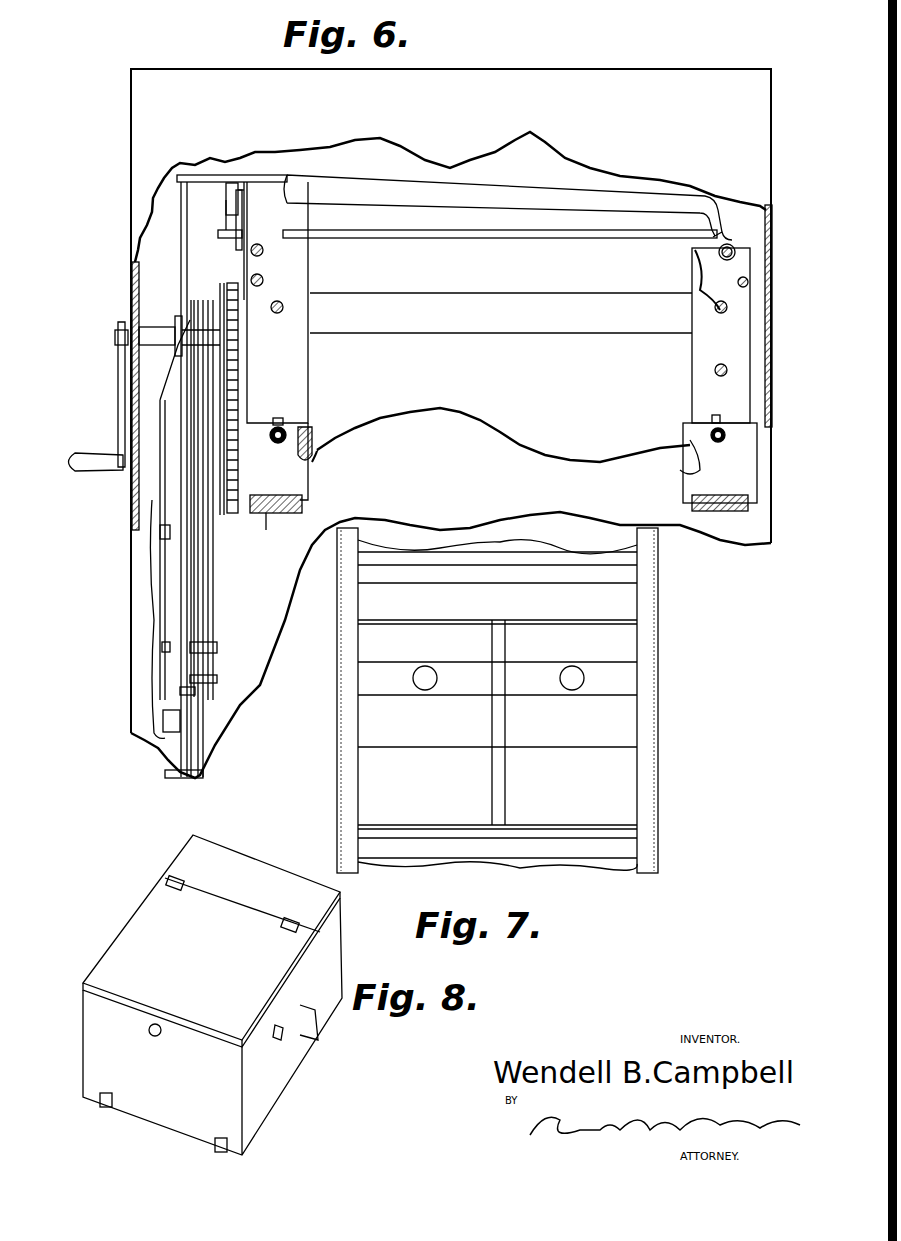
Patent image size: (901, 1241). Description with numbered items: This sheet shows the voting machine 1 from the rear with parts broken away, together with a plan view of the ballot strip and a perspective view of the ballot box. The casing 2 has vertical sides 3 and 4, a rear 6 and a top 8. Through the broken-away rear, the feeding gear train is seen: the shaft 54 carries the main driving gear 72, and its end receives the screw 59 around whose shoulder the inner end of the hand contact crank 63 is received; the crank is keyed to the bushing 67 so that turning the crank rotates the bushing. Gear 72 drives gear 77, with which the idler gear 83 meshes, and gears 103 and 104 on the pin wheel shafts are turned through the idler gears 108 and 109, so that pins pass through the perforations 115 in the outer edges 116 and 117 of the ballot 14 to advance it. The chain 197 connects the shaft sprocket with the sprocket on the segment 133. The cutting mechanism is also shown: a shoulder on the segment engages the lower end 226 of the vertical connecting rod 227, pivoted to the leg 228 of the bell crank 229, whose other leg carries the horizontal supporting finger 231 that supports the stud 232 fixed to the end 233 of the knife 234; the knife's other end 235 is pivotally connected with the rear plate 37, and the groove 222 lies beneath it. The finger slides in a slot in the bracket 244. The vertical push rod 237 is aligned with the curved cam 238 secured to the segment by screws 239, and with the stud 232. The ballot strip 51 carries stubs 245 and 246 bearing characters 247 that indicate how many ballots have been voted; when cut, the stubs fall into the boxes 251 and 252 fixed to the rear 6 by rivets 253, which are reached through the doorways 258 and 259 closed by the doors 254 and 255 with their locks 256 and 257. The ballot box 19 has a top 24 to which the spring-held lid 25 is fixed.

In FIG. 6, the voting machine 1 is at (155, 88).
In FIG. 6, the casing 2 is at (150, 135).
In FIG. 6, the vertical side 3 is at (773, 378).
In FIG. 6, the vertical side 4 is at (132, 283).
In FIG. 6, the rear 6 is at (645, 105).
In FIG. 6, the top 8 is at (468, 66).
In FIG. 7, the ballot 14 is at (585, 775).
In FIG. 8, the ballot box 19 is at (165, 917).
In FIG. 8, the top of the ballot box 24 is at (140, 955).
In FIG. 8, the lid 25 is at (197, 867).
In FIG. 6, the rear plate 37 is at (501, 268).
In FIG. 7, the stack 51 is at (572, 868).
In FIG. 6, the shaft 54 is at (197, 325).
In FIG. 6, the screw 59 is at (118, 338).
In FIG. 6, the hand contact crank 63 is at (118, 403).
In FIG. 6, the bushing 67 is at (152, 325).
In FIG. 6, the main driving gear 72 is at (232, 285).
In FIG. 6, the gear 77 is at (240, 405).
In FIG. 6, the idler gear 83 is at (270, 424).
In FIG. 6, the gear 103 is at (302, 418).
In FIG. 6, the gear 104 is at (268, 513).
In FIG. 6, the idler gear 108 is at (240, 462).
In FIG. 6, the idler gear 109 is at (234, 534).
In FIG. 7, the perforations 115 is at (345, 700).
In FIG. 7, the outer edge 116 is at (274, 749).
In FIG. 7, the outer edge 117 is at (660, 697).
In FIG. 6, the segment 133 is at (181, 607).
In FIG. 6, the chain 197 is at (188, 463).
In FIG. 6, the groove 222 is at (375, 230).
In FIG. 6, the lower end 226 is at (195, 715).
In FIG. 6, the vertical connecting rod 227 is at (200, 585).
In FIG. 6, the leg 228 is at (220, 220).
In FIG. 6, the bell crank 229 is at (250, 178).
In FIG. 6, the horizontal supporting finger 231 is at (225, 190).
In FIG. 6, the stud 232 is at (205, 172).
In FIG. 6, the end of the knife 233 is at (290, 205).
In FIG. 6, the knife 234 is at (375, 190).
In FIG. 6, the end of the knife 235 is at (730, 232).
In FIG. 6, the vertical push rod 237 is at (158, 475).
In FIG. 6, the curved cam 238 is at (165, 562).
In FIG. 6, the screws 239 is at (160, 533).
In FIG. 6, the bracket 244 is at (255, 185).
In FIG. 7, the stub 245 is at (345, 808).
In FIG. 7, the stub 246 is at (660, 797).
In FIG. 7, the characters 247 is at (655, 672).
In FIG. 6, the box 251 is at (710, 348).
In FIG. 6, the box 252 is at (305, 353).
In FIG. 6, the rivets 253 is at (700, 300).
In FIG. 6, the door 254 is at (720, 463).
In FIG. 6, the door 255 is at (276, 490).
In FIG. 6, the lock 256 is at (712, 437).
In FIG. 6, the lock 257 is at (300, 432).
In FIG. 6, the doorway 258 is at (690, 468).
In FIG. 6, the doorway 259 is at (314, 440).